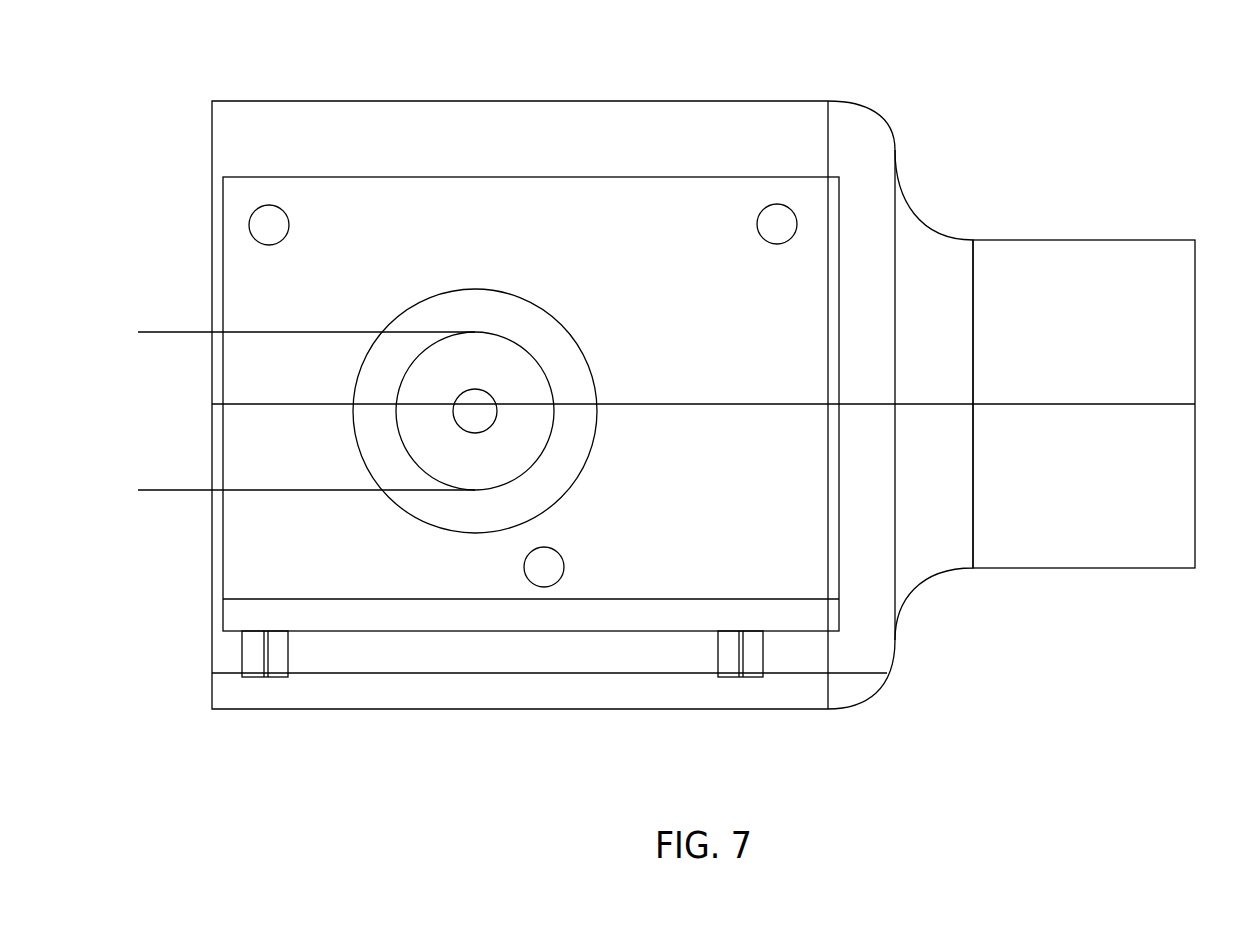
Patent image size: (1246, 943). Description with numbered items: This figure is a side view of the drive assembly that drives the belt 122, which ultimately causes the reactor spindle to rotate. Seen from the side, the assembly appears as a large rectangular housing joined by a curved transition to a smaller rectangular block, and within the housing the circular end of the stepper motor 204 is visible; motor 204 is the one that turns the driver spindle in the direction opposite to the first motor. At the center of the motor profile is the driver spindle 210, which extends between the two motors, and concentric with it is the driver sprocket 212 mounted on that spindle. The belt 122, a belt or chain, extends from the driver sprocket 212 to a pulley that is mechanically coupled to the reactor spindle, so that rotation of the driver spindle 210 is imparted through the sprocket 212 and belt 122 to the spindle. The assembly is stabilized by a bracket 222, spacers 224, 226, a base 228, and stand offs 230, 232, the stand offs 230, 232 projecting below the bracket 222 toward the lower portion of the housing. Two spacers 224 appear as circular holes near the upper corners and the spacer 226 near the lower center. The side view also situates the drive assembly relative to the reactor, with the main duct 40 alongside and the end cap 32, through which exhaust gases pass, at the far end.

The main duct 40 is at (395, 101).
The end cap 32 is at (1028, 240).
The belt 122 is at (160, 332).
The motor 204 is at (560, 320).
The driver spindle 210 is at (502, 418).
The driver sprocket 212 is at (425, 480).
The bracket 222 is at (720, 574).
The spacer 224 is at (289, 225).
The spacer 226 is at (564, 567).
The base 228 is at (522, 626).
The stand off 230 is at (298, 682).
The stand off 232 is at (712, 682).